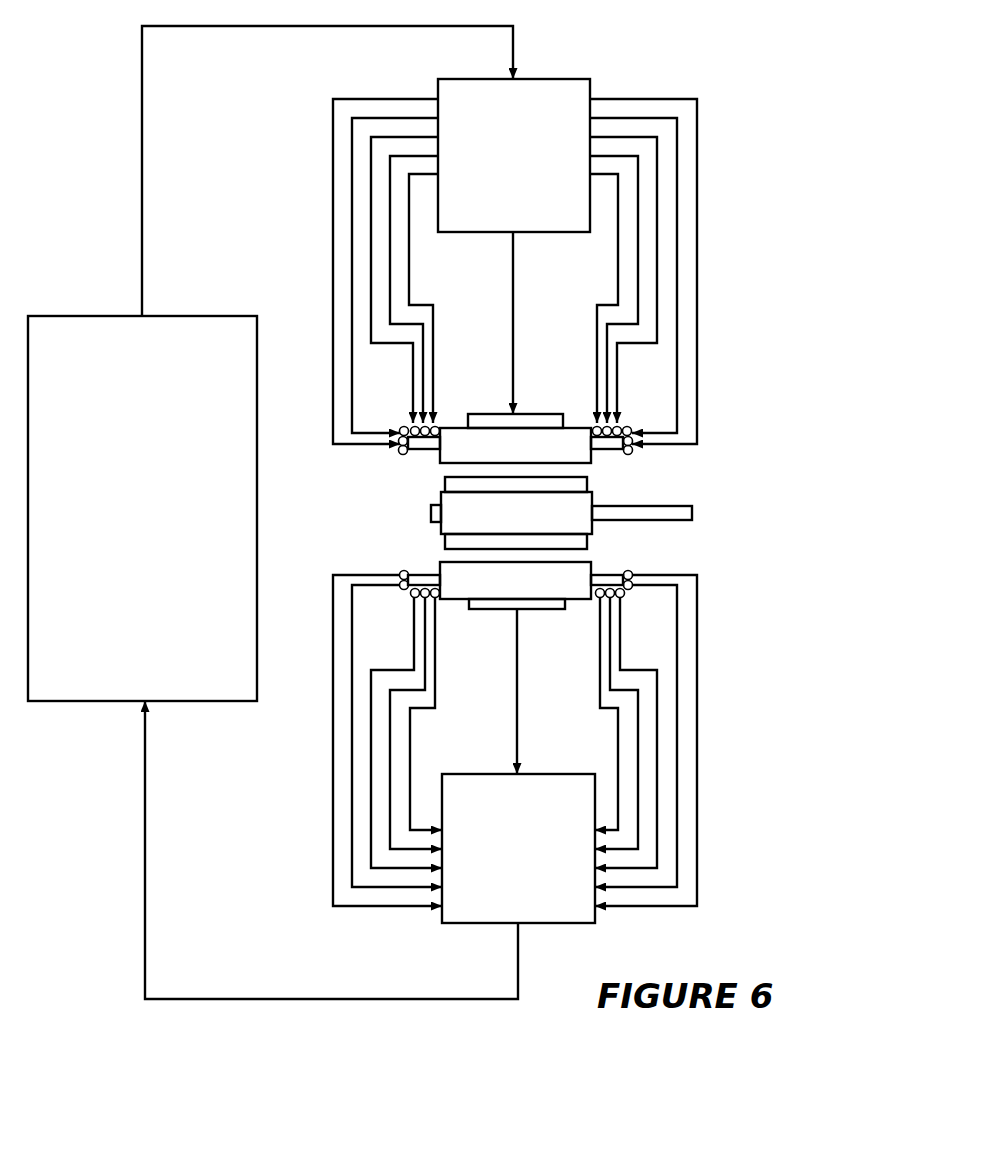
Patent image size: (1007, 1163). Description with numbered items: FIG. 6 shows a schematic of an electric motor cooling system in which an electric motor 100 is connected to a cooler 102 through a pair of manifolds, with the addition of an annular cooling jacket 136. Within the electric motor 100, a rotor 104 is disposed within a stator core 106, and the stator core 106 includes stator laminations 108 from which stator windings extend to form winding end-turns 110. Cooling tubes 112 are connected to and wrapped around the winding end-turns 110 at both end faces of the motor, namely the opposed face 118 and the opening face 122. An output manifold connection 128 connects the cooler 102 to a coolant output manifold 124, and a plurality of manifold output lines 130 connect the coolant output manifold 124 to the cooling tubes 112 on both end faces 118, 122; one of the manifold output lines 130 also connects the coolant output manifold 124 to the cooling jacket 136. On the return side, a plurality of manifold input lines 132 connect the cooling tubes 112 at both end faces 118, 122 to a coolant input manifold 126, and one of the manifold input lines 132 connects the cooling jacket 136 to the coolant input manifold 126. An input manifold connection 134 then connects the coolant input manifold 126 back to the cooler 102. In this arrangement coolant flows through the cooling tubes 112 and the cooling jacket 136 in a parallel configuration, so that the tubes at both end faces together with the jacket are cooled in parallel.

The electric motor 100 is at (773, 492).
The cooler 102 is at (142, 508).
The rotor 104 is at (561, 513).
The stator core 106 is at (423, 498).
The stator laminations 108 is at (515, 513).
The winding end-turns 110 is at (423, 462).
The cooling tubes 112 is at (423, 452).
The opposed face 118 is at (423, 540).
The opening face 122 is at (670, 488).
The coolant output manifold 124 is at (515, 261).
The coolant input manifold 126 is at (515, 749).
The output manifold connection 128 is at (142, 138).
The manifold output lines 130 is at (430, 283).
The manifold input lines 132 is at (428, 731).
The input manifold connection 134 is at (145, 888).
The annular cooling jacket 136 is at (502, 415).